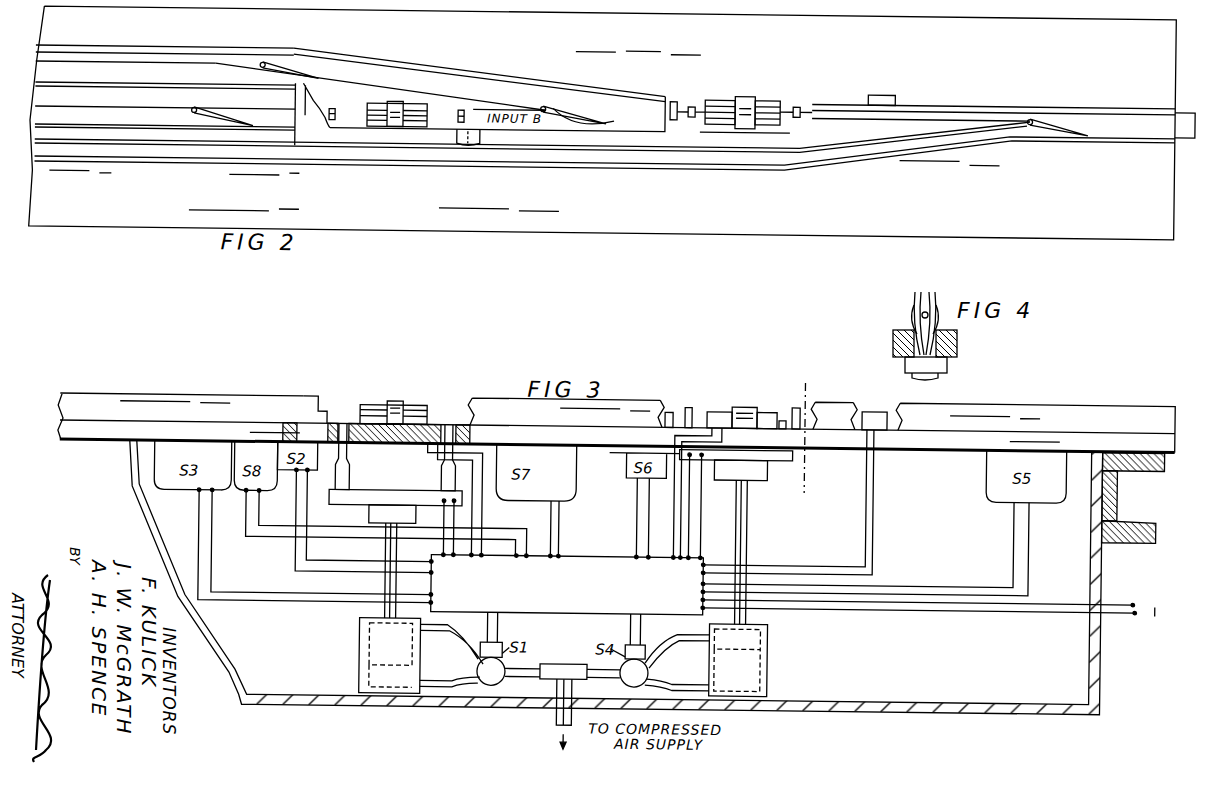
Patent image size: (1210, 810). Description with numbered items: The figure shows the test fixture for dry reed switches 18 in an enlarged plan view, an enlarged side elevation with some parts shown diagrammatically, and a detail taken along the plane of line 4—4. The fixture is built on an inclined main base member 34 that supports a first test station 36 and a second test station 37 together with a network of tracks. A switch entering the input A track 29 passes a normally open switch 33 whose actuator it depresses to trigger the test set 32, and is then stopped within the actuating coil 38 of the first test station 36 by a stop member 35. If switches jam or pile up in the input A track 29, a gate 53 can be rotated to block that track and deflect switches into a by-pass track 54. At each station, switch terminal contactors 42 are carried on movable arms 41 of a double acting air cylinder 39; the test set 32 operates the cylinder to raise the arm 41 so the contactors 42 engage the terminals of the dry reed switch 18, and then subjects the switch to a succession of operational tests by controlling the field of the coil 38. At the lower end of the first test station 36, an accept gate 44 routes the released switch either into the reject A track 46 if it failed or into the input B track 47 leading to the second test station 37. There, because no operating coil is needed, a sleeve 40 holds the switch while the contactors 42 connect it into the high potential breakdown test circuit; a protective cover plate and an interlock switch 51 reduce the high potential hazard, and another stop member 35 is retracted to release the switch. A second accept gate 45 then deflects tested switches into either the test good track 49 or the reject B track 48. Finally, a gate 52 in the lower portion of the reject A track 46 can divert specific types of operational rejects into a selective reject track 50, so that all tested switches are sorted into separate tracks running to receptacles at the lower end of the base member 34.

In FIG. 3, the section line 4— 4 is at (805, 373).
In FIG. 4, the dry reed switch 18 is at (913, 312).
In FIG. 3, the dry reed switch 18 is at (779, 413).
In FIG. 2, the input A track 29 is at (1078, 106).
In FIG. 3, the test set 32 is at (588, 558).
In FIG. 2, the normally open switch 33 is at (884, 86).
In FIG. 3, the normally open switch 33 is at (875, 402).
In FIG. 3, the main base member 34 is at (936, 433).
In FIG. 2, the stop member 35 is at (320, 104).
In FIG. 3, the stop member 35 is at (320, 407).
In FIG. 2, the first test station 36 is at (776, 83).
In FIG. 3, the first test station 36 is at (775, 394).
In FIG. 2, the second test station 37 is at (445, 104).
In FIG. 3, the second test station 37 is at (430, 391).
In FIG. 2, the actuating coil 38 is at (722, 88).
In FIG. 3, the actuating coil 38 is at (752, 400).
In FIG. 3, the double acting air cylinder 39 is at (362, 634).
In FIG. 2, the sleeve 40 is at (418, 123).
In FIG. 3, the sleeve 40 is at (372, 403).
In FIG. 2, the movable arm 41 is at (321, 131).
In FIG. 3, the movable arm 41 is at (386, 577).
In FIG. 2, the switch terminal contactor 42 is at (333, 117).
In FIG. 4, the switch terminal contactor 42 is at (927, 313).
In FIG. 3, the switch terminal contactor 42 is at (343, 426).
In FIG. 2, the accept gate 44 is at (544, 102).
In FIG. 2, the accept gate 45 is at (213, 115).
In FIG. 2, the reject A track 46 is at (433, 77).
In FIG. 2, the input B track 47 is at (598, 116).
In FIG. 2, the reject B track 48 is at (157, 106).
In FIG. 2, the test good track 49 is at (163, 115).
In FIG. 2, the selective reject track 50 is at (222, 73).
In FIG. 2, the interlock switch 51 is at (477, 141).
In FIG. 2, the gate 52 is at (317, 78).
In FIG. 2, the gate 53 is at (1046, 107).
In FIG. 2, the by-pass track 54 is at (815, 147).